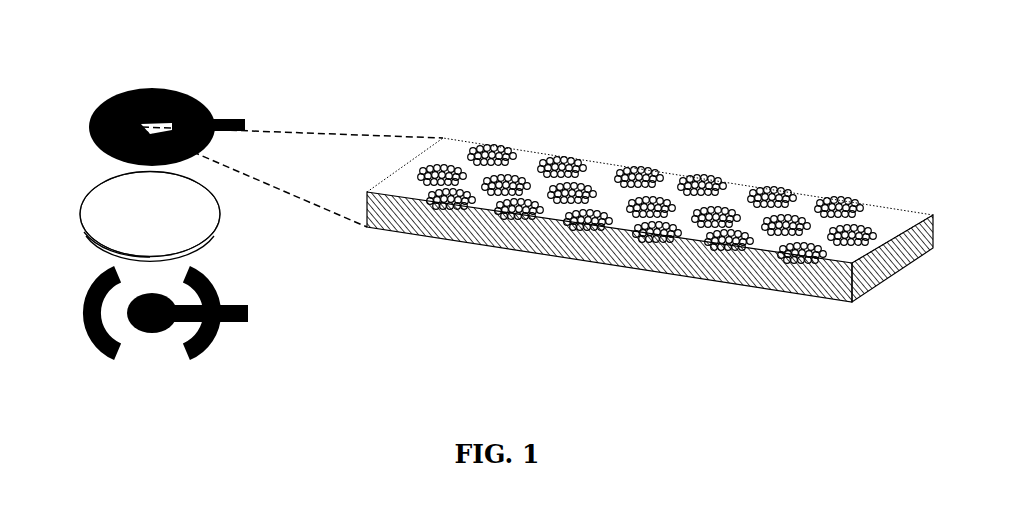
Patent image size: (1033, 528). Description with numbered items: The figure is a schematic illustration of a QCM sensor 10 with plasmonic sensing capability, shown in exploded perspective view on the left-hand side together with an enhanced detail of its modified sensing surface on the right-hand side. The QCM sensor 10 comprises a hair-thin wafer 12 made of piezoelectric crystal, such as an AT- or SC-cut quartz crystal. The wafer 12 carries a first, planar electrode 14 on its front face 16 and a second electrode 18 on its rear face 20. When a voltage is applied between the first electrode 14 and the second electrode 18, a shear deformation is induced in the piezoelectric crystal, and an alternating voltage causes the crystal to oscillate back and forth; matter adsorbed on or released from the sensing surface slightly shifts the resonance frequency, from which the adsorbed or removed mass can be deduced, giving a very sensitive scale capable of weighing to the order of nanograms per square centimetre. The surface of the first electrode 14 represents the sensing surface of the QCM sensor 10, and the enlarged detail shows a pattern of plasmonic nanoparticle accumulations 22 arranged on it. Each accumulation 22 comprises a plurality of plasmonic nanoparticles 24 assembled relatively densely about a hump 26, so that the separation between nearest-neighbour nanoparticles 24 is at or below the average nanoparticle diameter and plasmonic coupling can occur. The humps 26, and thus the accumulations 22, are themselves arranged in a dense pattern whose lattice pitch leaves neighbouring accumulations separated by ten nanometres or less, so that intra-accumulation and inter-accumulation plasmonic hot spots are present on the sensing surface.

The QCM sensor 10 is at (341, 60).
The wafer 12 is at (236, 245).
The first electrode 14 is at (152, 88).
The front face 16 is at (113, 195).
The second electrode 18 is at (205, 343).
The rear face 20 is at (93, 251).
The plasmonic nanoparticle accumulations 22 is at (575, 138).
The plasmonic nanoparticles 24 is at (792, 192).
The hump 26 is at (728, 247).